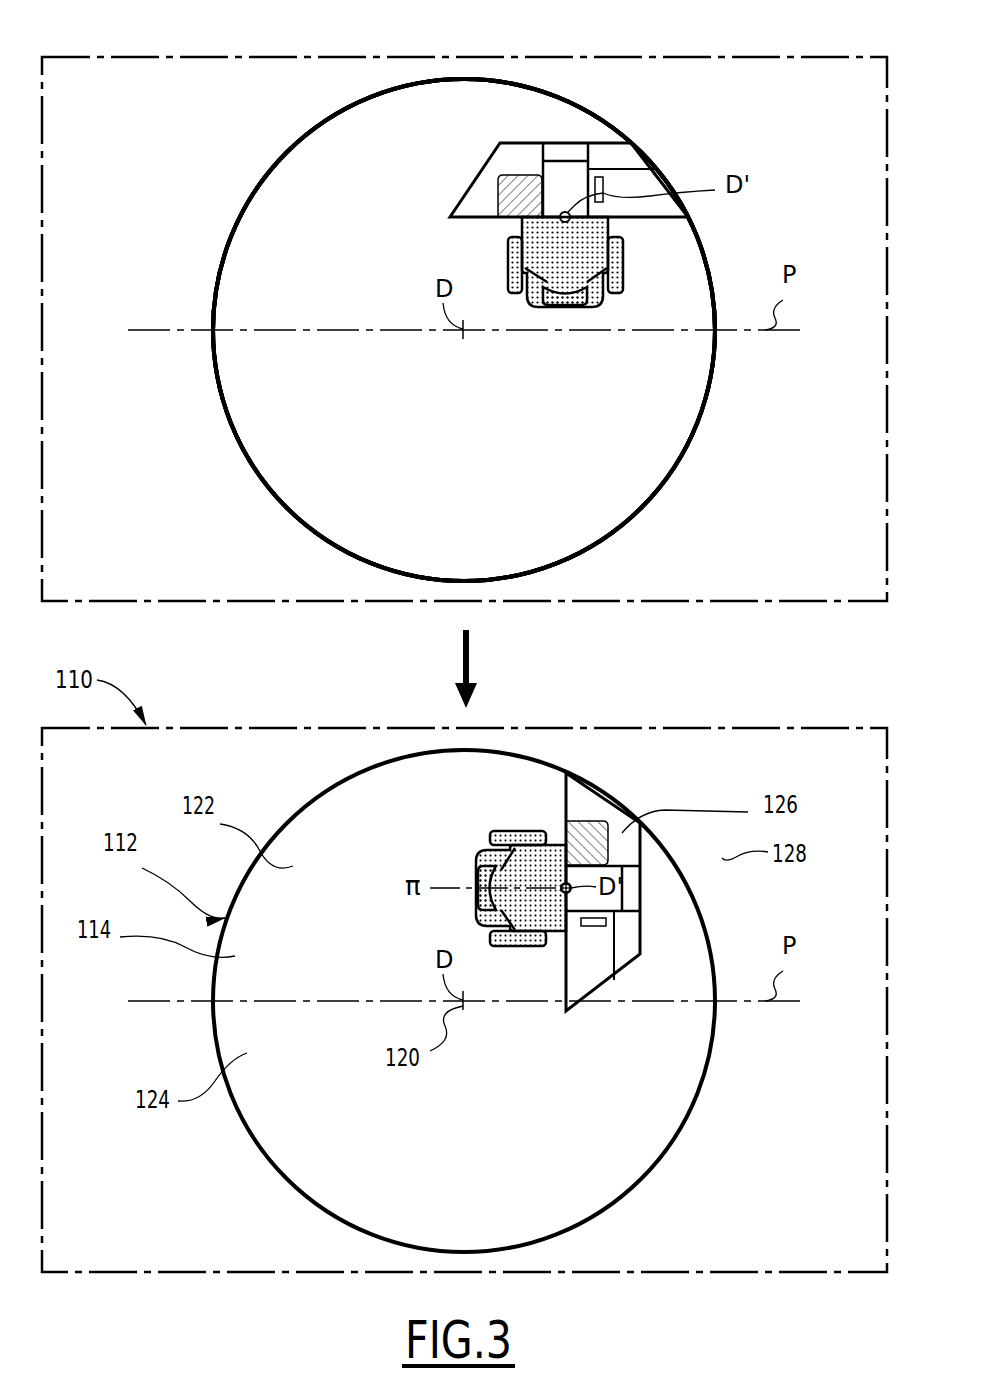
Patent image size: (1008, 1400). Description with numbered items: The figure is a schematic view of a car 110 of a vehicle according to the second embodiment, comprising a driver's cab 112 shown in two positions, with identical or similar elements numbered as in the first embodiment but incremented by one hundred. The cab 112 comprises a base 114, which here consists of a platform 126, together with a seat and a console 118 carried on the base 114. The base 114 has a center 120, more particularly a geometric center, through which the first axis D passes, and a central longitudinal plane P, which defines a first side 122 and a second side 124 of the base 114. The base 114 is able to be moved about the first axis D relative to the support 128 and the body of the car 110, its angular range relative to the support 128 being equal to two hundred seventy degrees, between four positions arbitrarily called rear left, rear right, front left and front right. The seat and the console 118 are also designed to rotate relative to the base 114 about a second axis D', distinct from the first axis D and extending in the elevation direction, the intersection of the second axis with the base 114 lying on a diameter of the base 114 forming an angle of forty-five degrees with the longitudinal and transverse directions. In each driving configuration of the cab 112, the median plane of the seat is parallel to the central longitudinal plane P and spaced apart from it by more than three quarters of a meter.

The car 110 is at (146, 54).
The driver's cab 112 is at (225, 247).
The base 114 is at (235, 285).
The console 118 is at (603, 157).
The center 120 is at (463, 335).
The first side 122 is at (293, 195).
The second side 124 is at (247, 382).
The platform 126 is at (505, 105).
The support 128 is at (653, 122).